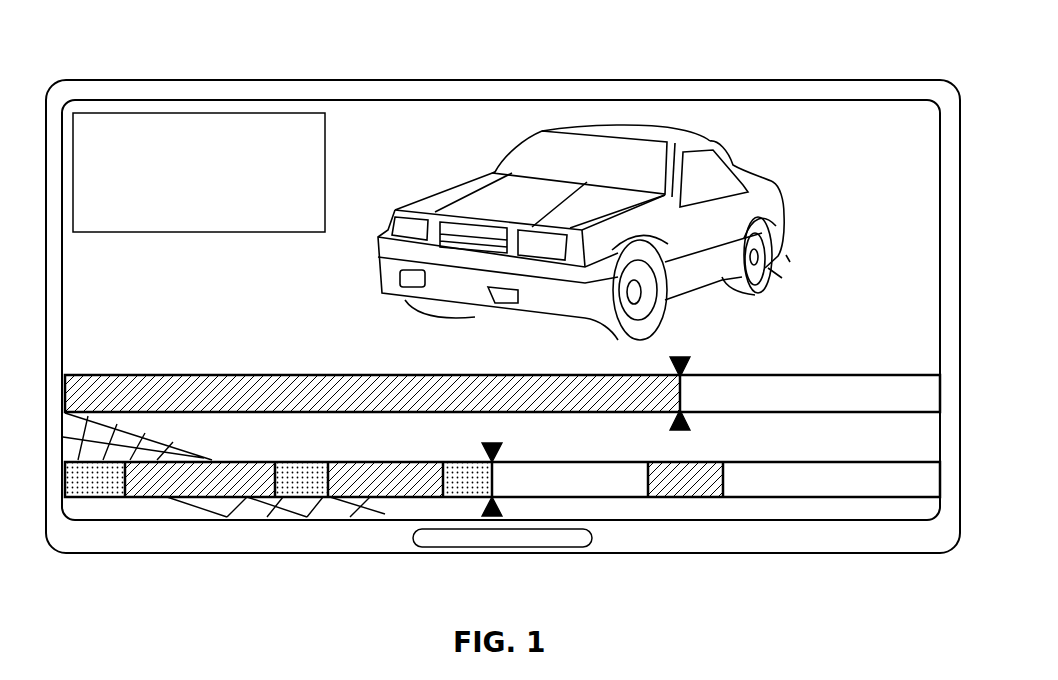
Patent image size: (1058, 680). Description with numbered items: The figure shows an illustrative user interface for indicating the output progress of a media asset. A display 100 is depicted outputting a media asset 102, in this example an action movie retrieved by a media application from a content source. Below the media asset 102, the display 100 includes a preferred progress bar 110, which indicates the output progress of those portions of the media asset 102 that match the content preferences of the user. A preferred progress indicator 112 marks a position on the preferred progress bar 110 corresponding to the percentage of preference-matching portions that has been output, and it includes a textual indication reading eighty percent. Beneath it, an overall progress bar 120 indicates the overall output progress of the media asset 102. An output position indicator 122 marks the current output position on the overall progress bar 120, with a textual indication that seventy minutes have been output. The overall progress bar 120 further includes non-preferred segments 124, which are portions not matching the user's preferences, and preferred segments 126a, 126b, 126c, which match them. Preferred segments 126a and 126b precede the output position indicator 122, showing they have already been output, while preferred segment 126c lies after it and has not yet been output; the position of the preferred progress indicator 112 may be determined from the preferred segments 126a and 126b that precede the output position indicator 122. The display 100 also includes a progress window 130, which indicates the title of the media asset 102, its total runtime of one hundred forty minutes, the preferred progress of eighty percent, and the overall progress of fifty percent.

The display 100 is at (503, 307).
The media asset 102 is at (762, 117).
The preferred progress bar 110 is at (857, 374).
The preferred progress indicator 112 is at (692, 357).
The overall progress bar 120 is at (840, 498).
The output position indicator 122 is at (495, 512).
The non-preferred segments 124 is at (105, 487).
The preferred segment 126a is at (207, 482).
The preferred segment 126b is at (368, 485).
The preferred segment 126c is at (660, 482).
The progress window 130 is at (172, 113).